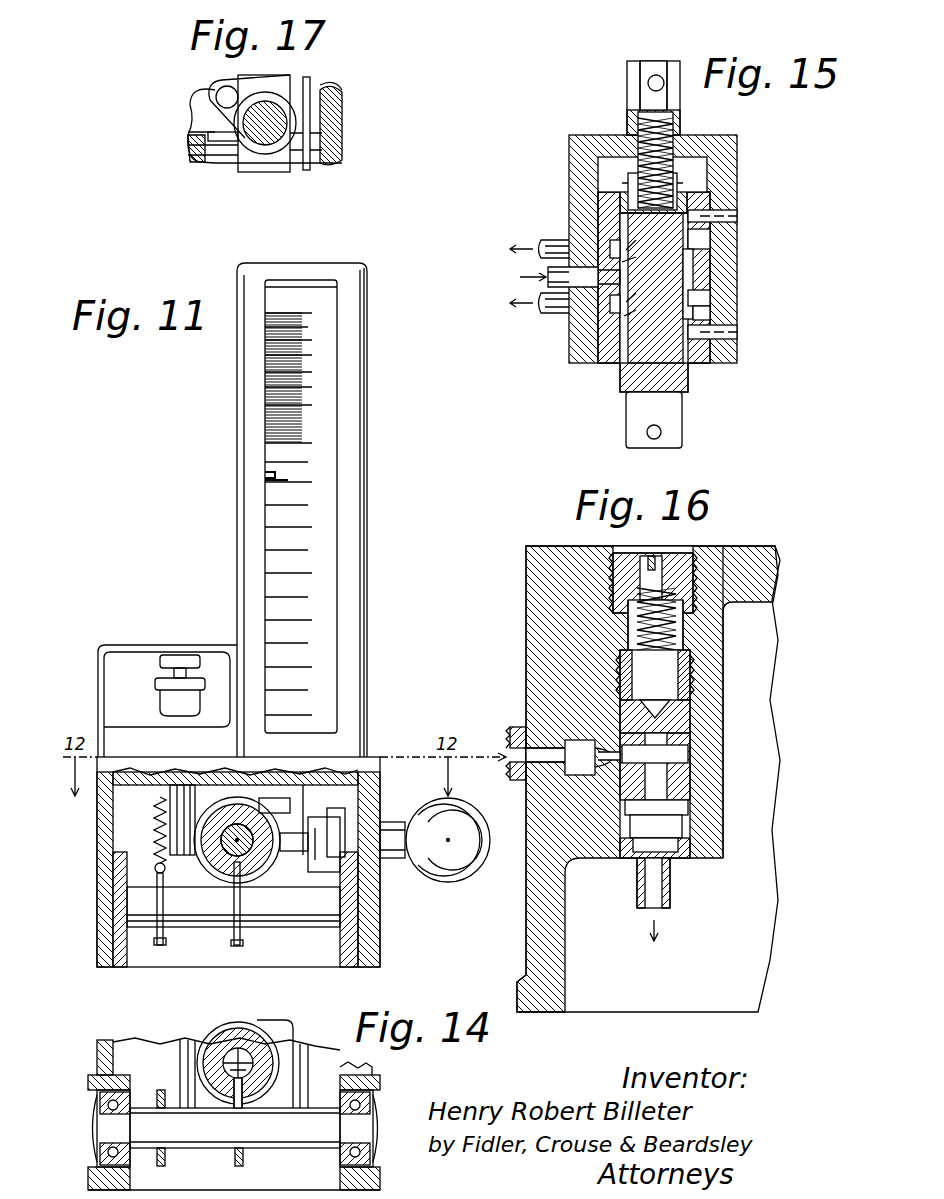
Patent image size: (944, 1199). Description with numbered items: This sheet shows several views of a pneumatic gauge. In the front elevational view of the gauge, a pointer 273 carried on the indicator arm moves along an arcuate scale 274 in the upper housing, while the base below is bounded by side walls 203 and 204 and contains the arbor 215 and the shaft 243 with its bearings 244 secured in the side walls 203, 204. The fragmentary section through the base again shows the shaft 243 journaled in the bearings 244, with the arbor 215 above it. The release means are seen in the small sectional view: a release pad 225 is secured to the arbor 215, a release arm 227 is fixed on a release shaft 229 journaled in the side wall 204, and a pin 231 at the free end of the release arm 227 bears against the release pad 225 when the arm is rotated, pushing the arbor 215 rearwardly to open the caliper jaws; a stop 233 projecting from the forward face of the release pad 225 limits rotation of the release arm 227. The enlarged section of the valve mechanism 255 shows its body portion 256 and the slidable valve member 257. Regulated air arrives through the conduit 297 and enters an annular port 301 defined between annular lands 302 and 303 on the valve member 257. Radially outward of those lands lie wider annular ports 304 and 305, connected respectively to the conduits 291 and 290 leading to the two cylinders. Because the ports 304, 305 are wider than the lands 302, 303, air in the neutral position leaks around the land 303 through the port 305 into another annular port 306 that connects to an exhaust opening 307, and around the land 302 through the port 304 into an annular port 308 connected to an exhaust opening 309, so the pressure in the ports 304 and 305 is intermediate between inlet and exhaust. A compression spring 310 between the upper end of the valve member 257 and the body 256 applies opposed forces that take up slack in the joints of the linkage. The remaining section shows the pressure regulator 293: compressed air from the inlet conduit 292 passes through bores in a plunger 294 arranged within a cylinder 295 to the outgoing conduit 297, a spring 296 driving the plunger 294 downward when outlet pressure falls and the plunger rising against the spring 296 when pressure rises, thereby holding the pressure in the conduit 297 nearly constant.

In FIG. 11, the side wall 203 is at (104, 843).
In FIG. 11, the side wall 204 is at (365, 918).
In FIG. 17, the arbor 215 is at (188, 147).
In FIG. 11, the arbor 215 is at (224, 870).
In FIG. 14, the arbor 215 is at (224, 1030).
In FIG. 17, the release pad 225 is at (250, 172).
In FIG. 17, the release arm 227 is at (205, 100).
In FIG. 17, the release shaft 229 is at (270, 140).
In FIG. 11, the release shaft 229 is at (392, 822).
In FIG. 17, the pin 231 is at (224, 88).
In FIG. 17, the stop 233 is at (212, 155).
In FIG. 11, the shaft 243 is at (283, 926).
In FIG. 14, the shaft 243 is at (287, 1150).
In FIG. 14, the bearings 244 is at (97, 1070).
In FIG. 15, the valve mechanism 255 is at (538, 165).
In FIG. 15, the body portion 256 is at (737, 150).
In FIG. 15, the slidable valve member 257 is at (690, 384).
In FIG. 11, the pointer 273 is at (268, 468).
In FIG. 11, the arcuate scale 274 is at (280, 538).
In FIG. 15, the conduit 290 is at (555, 313).
In FIG. 15, the conduit 291 is at (555, 240).
In FIG. 16, the conduit 292 is at (520, 725).
In FIG. 16, the pressure regulator 293 is at (516, 594).
In FIG. 16, the plunger 294 is at (622, 686).
In FIG. 16, the cylinder 295 is at (626, 630).
In FIG. 16, the spring 296 is at (682, 630).
In FIG. 15, the conduit 297 is at (547, 282).
In FIG. 16, the conduit 297 is at (670, 890).
In FIG. 15, the annular port 301 is at (686, 276).
In FIG. 15, the annular land 302 is at (715, 248).
In FIG. 15, the annular land 303 is at (715, 290).
In FIG. 15, the annular port 304 is at (737, 233).
In FIG. 15, the annular port 305 is at (715, 312).
In FIG. 15, the annular port 306 is at (688, 322).
In FIG. 15, the exhaust opening 307 is at (737, 337).
In FIG. 15, the annular port 308 is at (652, 204).
In FIG. 15, the exhaust opening 309 is at (737, 215).
In FIG. 15, the compression spring 310 is at (680, 145).